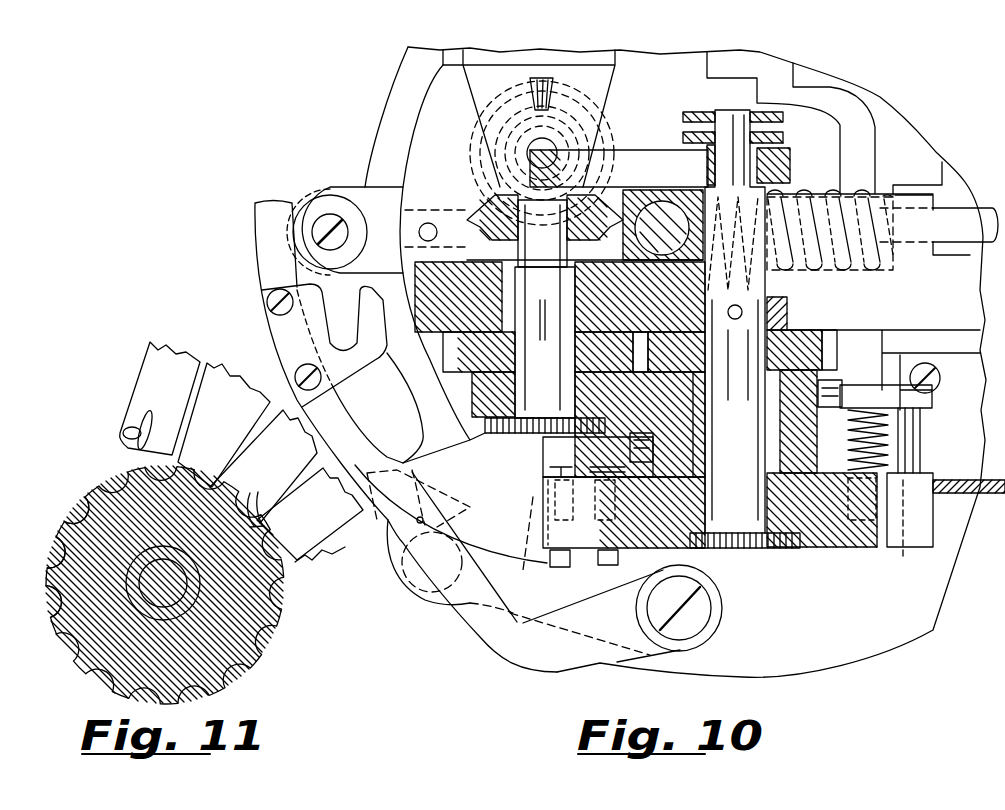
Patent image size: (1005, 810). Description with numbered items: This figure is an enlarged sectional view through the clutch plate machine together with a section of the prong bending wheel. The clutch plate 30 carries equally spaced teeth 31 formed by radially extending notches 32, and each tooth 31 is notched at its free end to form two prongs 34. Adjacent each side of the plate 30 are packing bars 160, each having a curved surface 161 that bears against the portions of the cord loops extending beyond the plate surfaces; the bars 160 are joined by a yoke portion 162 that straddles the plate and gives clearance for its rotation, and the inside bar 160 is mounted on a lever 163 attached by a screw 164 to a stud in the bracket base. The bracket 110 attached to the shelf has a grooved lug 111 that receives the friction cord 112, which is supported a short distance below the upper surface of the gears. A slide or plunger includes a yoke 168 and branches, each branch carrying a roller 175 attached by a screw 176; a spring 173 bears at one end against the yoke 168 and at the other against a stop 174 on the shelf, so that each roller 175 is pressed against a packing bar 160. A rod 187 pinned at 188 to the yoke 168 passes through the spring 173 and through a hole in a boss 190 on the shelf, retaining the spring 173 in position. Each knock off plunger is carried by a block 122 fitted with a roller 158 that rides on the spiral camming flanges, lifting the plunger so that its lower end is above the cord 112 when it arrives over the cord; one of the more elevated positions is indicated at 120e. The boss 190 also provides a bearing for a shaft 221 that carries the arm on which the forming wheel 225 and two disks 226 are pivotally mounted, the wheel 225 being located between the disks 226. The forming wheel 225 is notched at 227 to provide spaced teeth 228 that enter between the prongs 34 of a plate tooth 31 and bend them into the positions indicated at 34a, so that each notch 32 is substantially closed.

In FIG. 10, the packing bar 160 is at (272, 210).
In FIG. 10, the roller 175 is at (318, 205).
In FIG. 10, the screw 176 is at (329, 215).
In FIG. 10, the pin 188 is at (419, 232).
In FIG. 10, the yoke 168 is at (455, 200).
In FIG. 10, the spring 173 is at (790, 194).
In FIG. 10, the stop 174 is at (900, 183).
In FIG. 10, the boss 190 is at (918, 192).
In FIG. 10, the rod 187 is at (978, 206).
In FIG. 10, the bracket 110 is at (953, 365).
In FIG. 10, the roller 158 is at (630, 450).
In FIG. 10, the block 122 is at (862, 390).
In FIG. 10, the knock off plunger elevated position 120e is at (925, 422).
In FIG. 10, the lug 111 is at (940, 472).
In FIG. 10, the friction cord 112 is at (958, 493).
In FIG. 10, the curved surface 161 is at (300, 407).
In FIG. 10, the yoke portion 162 is at (528, 545).
In FIG. 10, the lever 163 is at (500, 662).
In FIG. 10, the screw 164 is at (690, 617).
In FIG. 11, the forming wheel 225 is at (245, 605).
In FIG. 11, the shaft 221 is at (172, 596).
In FIG. 11, the disk 226 is at (62, 522).
In FIG. 11, the tooth 228 is at (55, 540).
In FIG. 11, the notch 227 is at (52, 572).
In FIG. 11, the clutch plate 30 is at (177, 370).
In FIG. 11, the tooth 31 is at (147, 378).
In FIG. 11, the notch 32 is at (303, 482).
In FIG. 11, the prong 34 is at (143, 424).
In FIG. 11, the bent prong position 34a is at (255, 510).